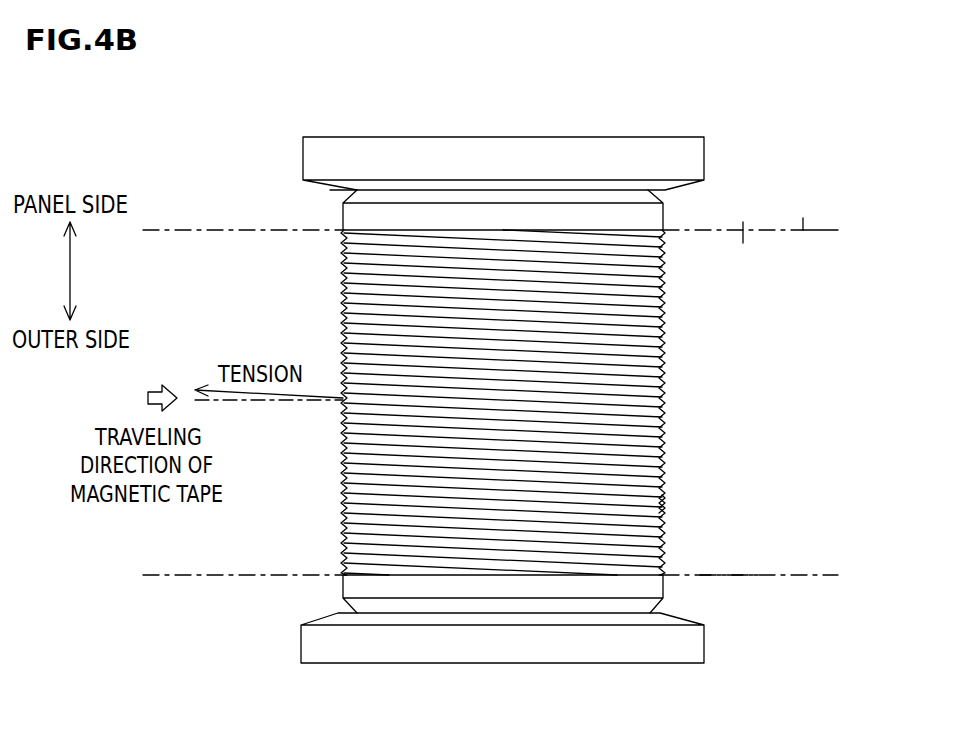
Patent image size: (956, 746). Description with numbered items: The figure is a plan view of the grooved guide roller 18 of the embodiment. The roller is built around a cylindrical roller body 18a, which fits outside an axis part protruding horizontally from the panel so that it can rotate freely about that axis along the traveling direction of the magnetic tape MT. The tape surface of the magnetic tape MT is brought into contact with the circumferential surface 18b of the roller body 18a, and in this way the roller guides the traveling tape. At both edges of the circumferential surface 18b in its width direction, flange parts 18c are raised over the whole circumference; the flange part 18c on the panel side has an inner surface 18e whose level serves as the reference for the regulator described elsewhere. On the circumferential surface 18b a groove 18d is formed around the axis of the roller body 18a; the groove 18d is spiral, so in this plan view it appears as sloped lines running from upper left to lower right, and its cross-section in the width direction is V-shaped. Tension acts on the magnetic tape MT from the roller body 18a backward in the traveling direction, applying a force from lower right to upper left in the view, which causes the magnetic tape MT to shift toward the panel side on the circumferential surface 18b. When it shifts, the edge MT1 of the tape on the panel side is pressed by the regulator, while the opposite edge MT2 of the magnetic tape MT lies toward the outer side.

The grooved guide roller 18 is at (330, 106).
The roller body 18a is at (679, 336).
The circumferential surface 18b is at (488, 217).
The flange part 18c is at (578, 150).
The groove 18d is at (660, 506).
The inner surface 18e is at (340, 184).
The magnetic tape MT is at (743, 224).
The edge MT1 is at (803, 216).
The magnetic tape outer-side edge MT2 is at (735, 577).